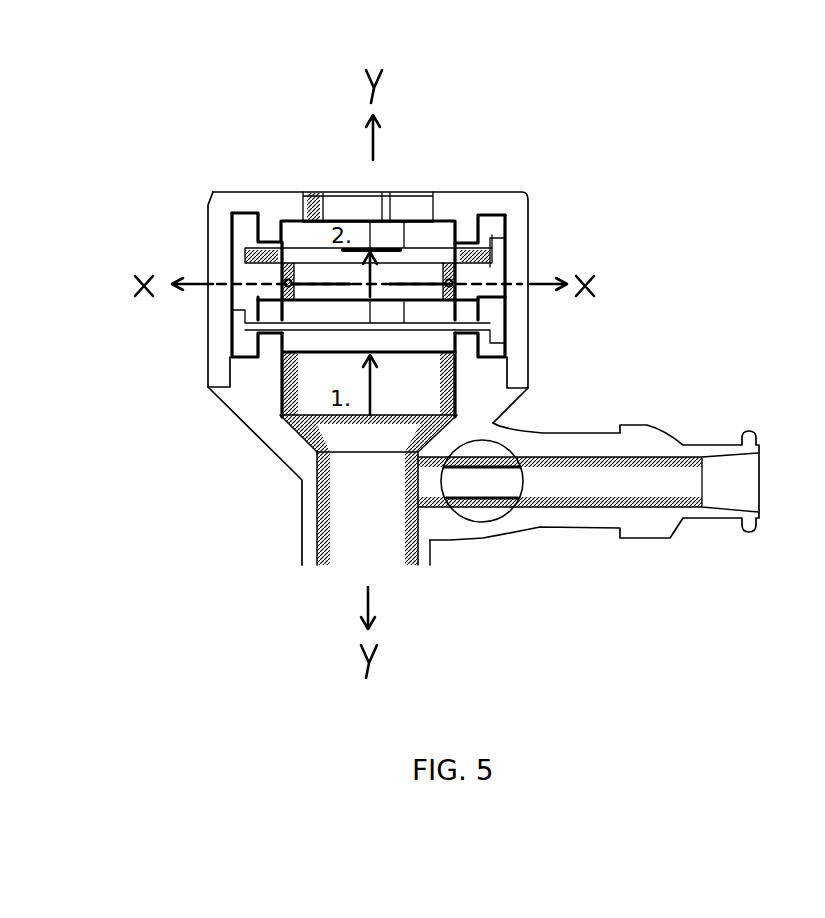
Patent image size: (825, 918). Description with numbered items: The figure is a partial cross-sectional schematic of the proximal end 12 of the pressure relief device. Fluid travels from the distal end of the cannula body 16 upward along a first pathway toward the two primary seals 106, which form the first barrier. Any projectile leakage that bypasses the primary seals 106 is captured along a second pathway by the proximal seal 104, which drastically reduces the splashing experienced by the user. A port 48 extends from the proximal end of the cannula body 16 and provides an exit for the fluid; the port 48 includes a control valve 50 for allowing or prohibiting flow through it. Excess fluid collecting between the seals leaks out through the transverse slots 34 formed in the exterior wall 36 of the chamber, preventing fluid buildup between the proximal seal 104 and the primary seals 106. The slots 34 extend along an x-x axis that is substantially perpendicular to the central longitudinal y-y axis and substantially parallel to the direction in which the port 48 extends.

The proximal end 12 is at (718, 173).
The cannula body 16 is at (320, 533).
The transverse slots 34 is at (284, 271).
The exterior wall 36 is at (258, 297).
The port 48 is at (680, 549).
The control valve 50 is at (497, 520).
The proximal seal 104 is at (505, 222).
The primary seals 106 is at (504, 347).